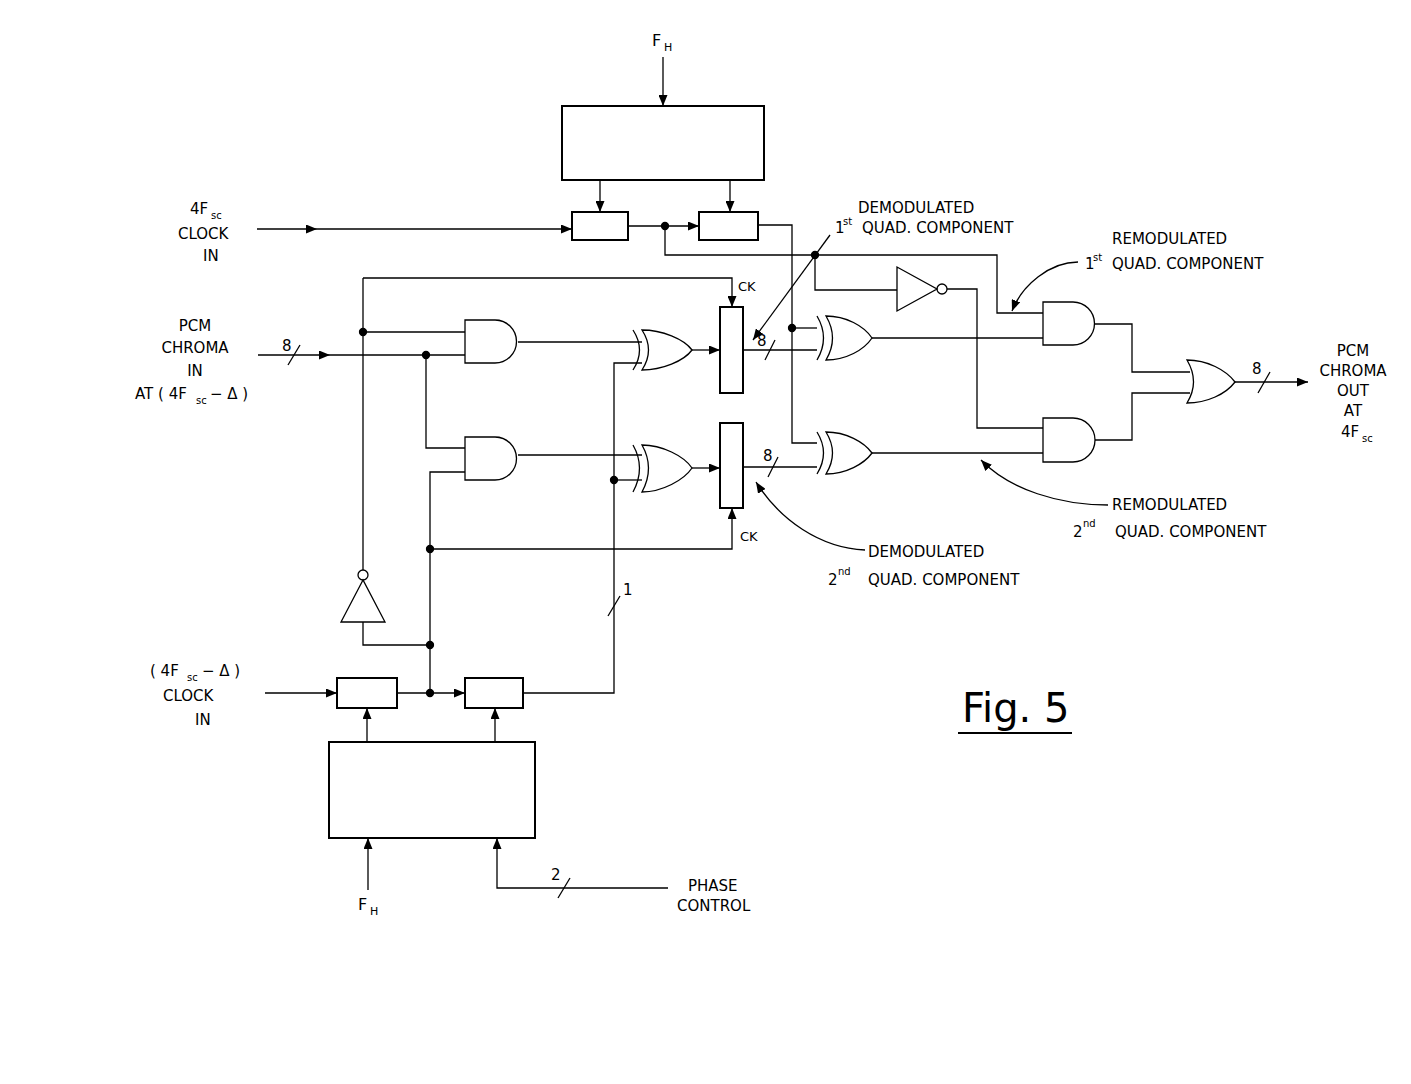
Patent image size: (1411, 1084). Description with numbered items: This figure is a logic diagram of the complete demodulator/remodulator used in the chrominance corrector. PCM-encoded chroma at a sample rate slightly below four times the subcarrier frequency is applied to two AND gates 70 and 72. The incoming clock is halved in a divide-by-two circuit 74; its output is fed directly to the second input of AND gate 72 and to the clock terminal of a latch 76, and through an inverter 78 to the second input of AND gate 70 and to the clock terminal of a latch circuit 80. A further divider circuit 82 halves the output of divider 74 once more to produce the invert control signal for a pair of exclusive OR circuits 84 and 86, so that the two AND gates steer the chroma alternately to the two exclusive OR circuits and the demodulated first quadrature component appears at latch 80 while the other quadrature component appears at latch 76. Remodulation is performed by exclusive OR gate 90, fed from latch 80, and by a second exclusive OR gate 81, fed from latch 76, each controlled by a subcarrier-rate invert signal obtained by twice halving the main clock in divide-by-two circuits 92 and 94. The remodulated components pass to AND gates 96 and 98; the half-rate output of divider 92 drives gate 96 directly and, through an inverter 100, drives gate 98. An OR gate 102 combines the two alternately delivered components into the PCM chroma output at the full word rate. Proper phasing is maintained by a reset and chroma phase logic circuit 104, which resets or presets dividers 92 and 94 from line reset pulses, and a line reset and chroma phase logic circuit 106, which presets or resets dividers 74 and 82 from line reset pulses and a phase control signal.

The AND gate 70 is at (503, 320).
The AND gate 72 is at (505, 480).
The divide-by-two circuit 74 is at (352, 678).
The latch 76 is at (720, 492).
The inverter 78 is at (355, 596).
The latch circuit 80 is at (720, 318).
The exclusive-OR gate 81 is at (852, 430).
The divider circuit 82 is at (510, 678).
The exclusive OR circuit 84 is at (662, 325).
The exclusive OR circuit 86 is at (652, 490).
The exclusive OR gate 90 is at (855, 356).
The divide-by-two circuit 92 is at (625, 213).
The divide-by-two circuit 94 is at (758, 212).
The AND gate 96 is at (1075, 347).
The AND gate 98 is at (1075, 418).
The inverter 100 is at (928, 280).
The OR gate 102 is at (1197, 358).
The reset and chroma phase logic circuit 104 is at (732, 106).
The line reset and chroma phase logic circuit 106 is at (533, 742).